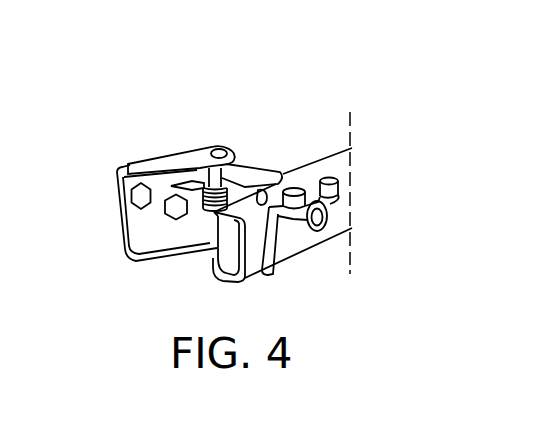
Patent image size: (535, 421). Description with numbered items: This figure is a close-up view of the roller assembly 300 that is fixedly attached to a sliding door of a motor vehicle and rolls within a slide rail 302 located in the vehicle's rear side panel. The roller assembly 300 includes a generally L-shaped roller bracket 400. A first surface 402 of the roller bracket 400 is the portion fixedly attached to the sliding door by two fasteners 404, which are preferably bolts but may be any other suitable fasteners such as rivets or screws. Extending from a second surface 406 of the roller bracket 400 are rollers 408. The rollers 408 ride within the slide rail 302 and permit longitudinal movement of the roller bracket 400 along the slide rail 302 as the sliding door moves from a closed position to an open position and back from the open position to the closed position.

The roller assembly 300 is at (239, 106).
The slide rail 302 is at (293, 243).
The roller bracket 400 is at (247, 140).
The first surface 402 is at (156, 180).
The fasteners 404 is at (131, 205).
The second surface 406 is at (250, 177).
The rollers 408 is at (329, 208).